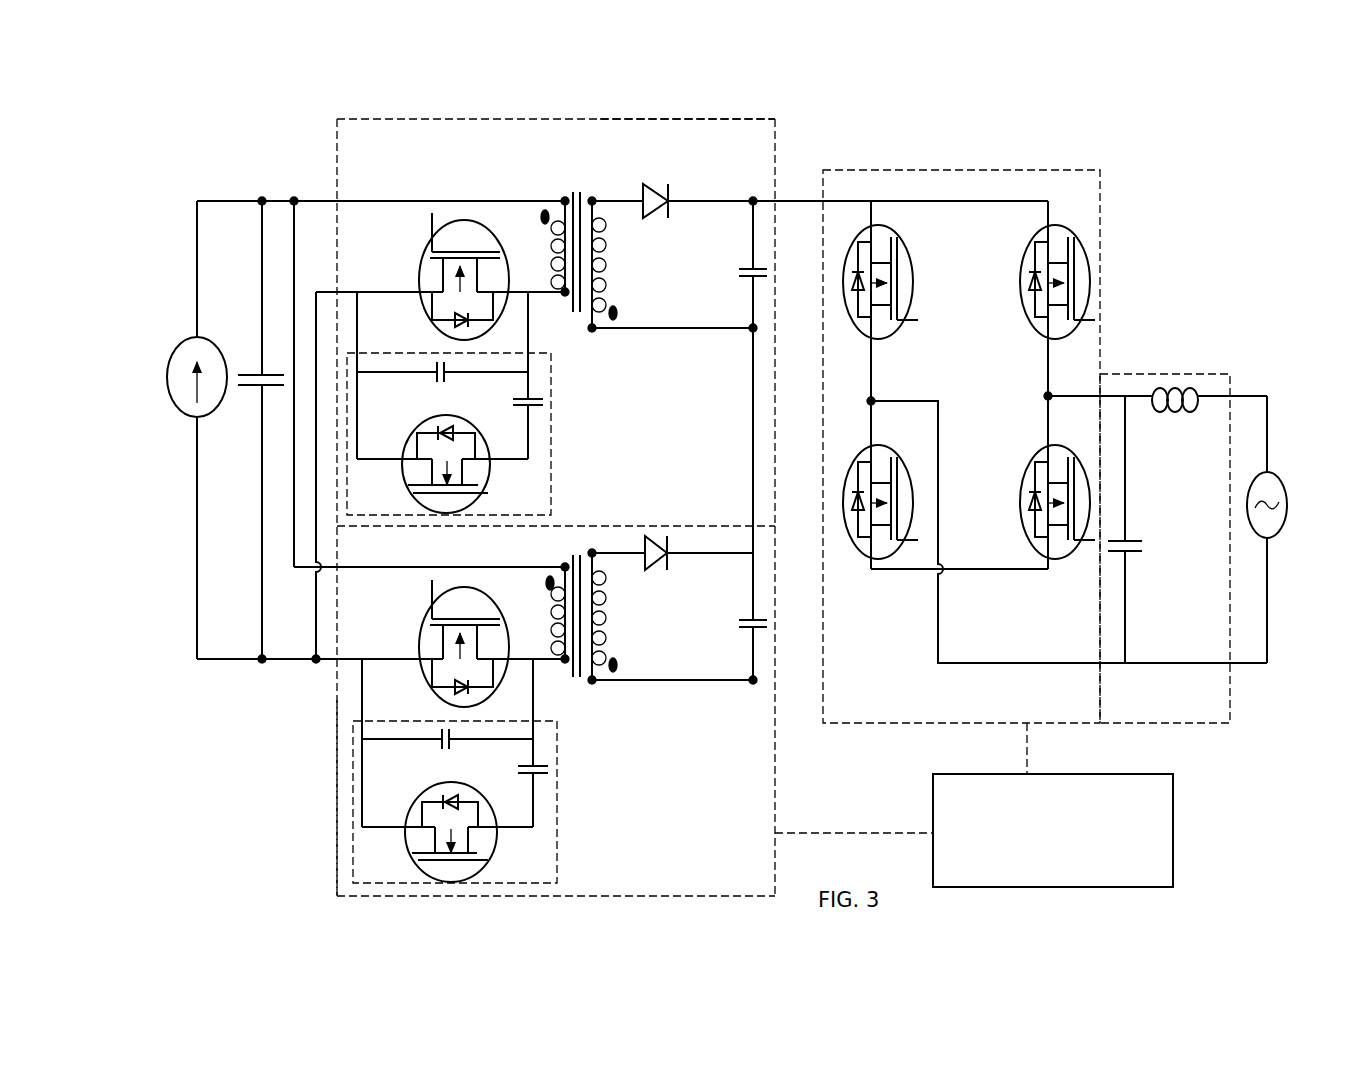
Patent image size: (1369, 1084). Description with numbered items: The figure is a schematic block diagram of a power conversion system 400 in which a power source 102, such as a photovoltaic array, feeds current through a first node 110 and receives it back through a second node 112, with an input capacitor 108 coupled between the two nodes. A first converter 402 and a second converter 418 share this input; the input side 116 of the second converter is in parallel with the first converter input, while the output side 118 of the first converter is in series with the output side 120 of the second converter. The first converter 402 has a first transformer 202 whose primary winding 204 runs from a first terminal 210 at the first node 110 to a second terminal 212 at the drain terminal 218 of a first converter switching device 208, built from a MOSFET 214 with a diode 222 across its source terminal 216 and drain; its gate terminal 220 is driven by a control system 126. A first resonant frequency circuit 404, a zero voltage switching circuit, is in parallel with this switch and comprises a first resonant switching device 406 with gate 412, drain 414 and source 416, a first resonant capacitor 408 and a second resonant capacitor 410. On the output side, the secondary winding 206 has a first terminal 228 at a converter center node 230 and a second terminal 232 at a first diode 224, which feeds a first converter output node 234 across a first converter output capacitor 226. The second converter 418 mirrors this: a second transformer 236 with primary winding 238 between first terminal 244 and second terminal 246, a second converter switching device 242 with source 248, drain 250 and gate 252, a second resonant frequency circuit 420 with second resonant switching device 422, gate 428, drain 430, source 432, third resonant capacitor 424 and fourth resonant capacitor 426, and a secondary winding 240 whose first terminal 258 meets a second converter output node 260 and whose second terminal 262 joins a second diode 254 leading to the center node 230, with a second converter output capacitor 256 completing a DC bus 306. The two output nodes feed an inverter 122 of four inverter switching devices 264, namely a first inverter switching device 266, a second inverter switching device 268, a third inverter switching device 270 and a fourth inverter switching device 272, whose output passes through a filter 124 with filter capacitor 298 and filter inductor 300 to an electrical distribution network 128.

The power source 102 is at (200, 418).
The input capacitor 108 is at (258, 368).
The first node 110 is at (262, 197).
The second node 112 is at (262, 663).
The input side of second converter 116 is at (305, 768).
The output side of first converter 118 is at (792, 143).
The output side of second converter 120 is at (791, 636).
The inverter 122 is at (926, 168).
The filter 124 is at (1214, 372).
The control system 126 is at (1174, 833).
The electrical distribution network 128 is at (1284, 486).
The first transformer 202 is at (596, 178).
The primary winding of first transformer 204 is at (552, 241).
The secondary winding of first transformer 206 is at (610, 250).
The first converter switching device 208 is at (452, 223).
The first terminal of first transformer primary winding 210 is at (563, 198).
The second terminal of first transformer primary winding 212 is at (564, 296).
The MOSFET 214 is at (463, 240).
The source terminal of first converter switching device 216 is at (402, 292).
The drain terminal of first converter switching device 218 is at (517, 292).
The gate terminal of first converter switching device 220 is at (431, 224).
The diode 222 is at (470, 325).
The first diode 224 is at (669, 181).
The first converter output capacitor 226 is at (745, 262).
The first terminal of first transformer secondary winding 228 is at (594, 332).
The converter center node 230 is at (751, 332).
The second terminal of first transformer secondary winding 232 is at (594, 199).
The first converter output node 234 is at (753, 198).
The second transformer 236 is at (596, 535).
The primary winding of second transformer 238 is at (553, 607).
The secondary winding of second transformer 240 is at (610, 601).
The second converter switching device 242 is at (458, 598).
The first terminal of second transformer primary winding 244 is at (563, 565).
The second terminal of second transformer primary winding 246 is at (564, 663).
The source terminal of second converter switching device 248 is at (412, 659).
The drain terminal of second converter switching device 250 is at (522, 656).
The gate terminal of second converter switching device 252 is at (431, 592).
The second diode 254 is at (670, 536).
The second converter output capacitor 256 is at (745, 613).
The first terminal of second transformer secondary winding 258 is at (590, 685).
The second converter output node 260 is at (752, 684).
The second terminal of second transformer secondary winding 262 is at (594, 551).
The inverter switching devices 264 is at (1021, 262).
The first inverter switching device 266 is at (858, 234).
The second inverter switching device 268 is at (852, 464).
The third inverter switching device 270 is at (1088, 244).
The fourth inverter switching device 272 is at (1058, 560).
The filter capacitor 298 is at (1139, 562).
The filter inductor 300 is at (1180, 420).
The DC bus 306 is at (752, 304).
The power conversion system 400 is at (1118, 143).
The first converter 402 is at (776, 167).
The first resonant frequency circuit 404 is at (552, 447).
The first resonant switching device 406 is at (403, 464).
The first resonant capacitor 408 is at (512, 397).
The second resonant capacitor 410 is at (432, 366).
The gate of first resonant switching device 412 is at (480, 500).
The drain of first resonant switching device 414 is at (392, 458).
The source of first resonant switching device 416 is at (497, 458).
The second converter 418 is at (336, 850).
The second resonant frequency circuit 420 is at (558, 818).
The second resonant switching device 422 is at (420, 806).
The third resonant capacitor 424 is at (541, 765).
The fourth resonant capacitor 426 is at (437, 733).
The gate of second resonant switching device 428 is at (480, 860).
The drain of second resonant switching device 430 is at (391, 826).
The source of second resonant switching device 432 is at (501, 826).